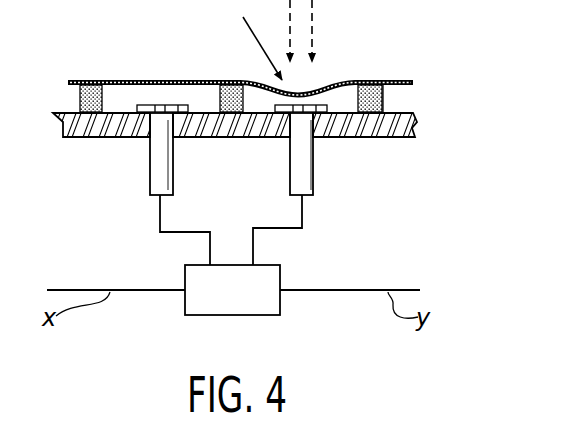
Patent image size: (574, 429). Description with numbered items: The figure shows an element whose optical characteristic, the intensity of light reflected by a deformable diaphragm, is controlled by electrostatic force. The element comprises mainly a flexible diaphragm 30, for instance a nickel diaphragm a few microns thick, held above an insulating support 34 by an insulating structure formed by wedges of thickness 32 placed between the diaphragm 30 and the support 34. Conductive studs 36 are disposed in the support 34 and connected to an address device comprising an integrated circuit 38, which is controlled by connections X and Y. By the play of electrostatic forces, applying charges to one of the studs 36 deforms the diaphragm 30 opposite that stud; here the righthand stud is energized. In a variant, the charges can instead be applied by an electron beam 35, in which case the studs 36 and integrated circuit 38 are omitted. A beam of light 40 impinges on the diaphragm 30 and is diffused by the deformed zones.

The flexible diaphragm 30 is at (183, 80).
The wedges of thickness 32 is at (80, 98).
The insulating support 34 is at (373, 123).
The electron beam 35 is at (258, 42).
The conductive studs 36 is at (297, 143).
The integrated circuit 38 is at (231, 255).
The beam of light 40 is at (315, 25).